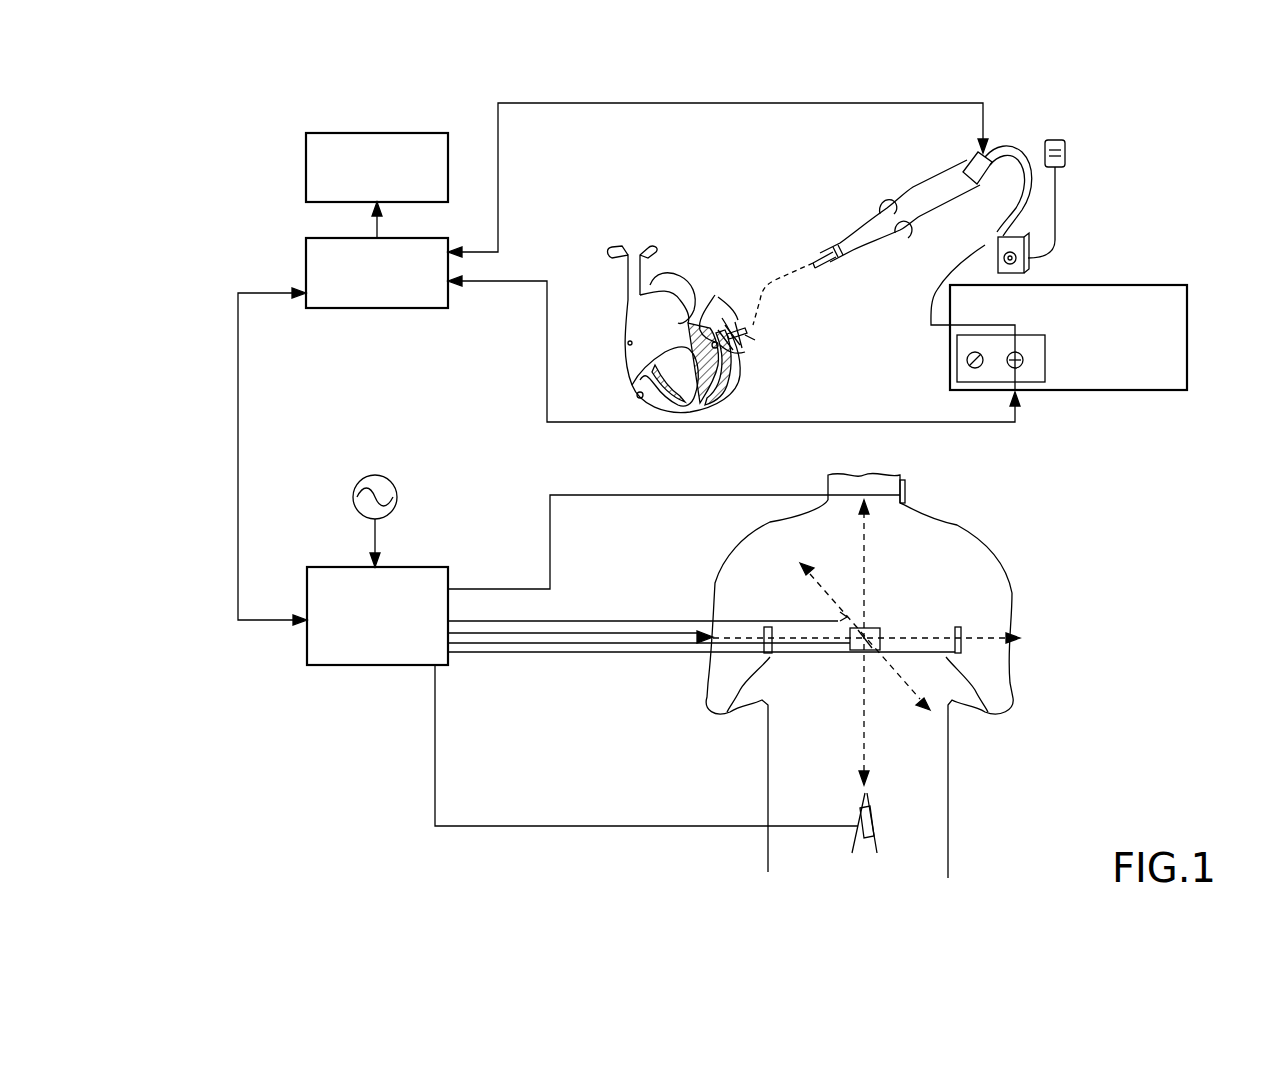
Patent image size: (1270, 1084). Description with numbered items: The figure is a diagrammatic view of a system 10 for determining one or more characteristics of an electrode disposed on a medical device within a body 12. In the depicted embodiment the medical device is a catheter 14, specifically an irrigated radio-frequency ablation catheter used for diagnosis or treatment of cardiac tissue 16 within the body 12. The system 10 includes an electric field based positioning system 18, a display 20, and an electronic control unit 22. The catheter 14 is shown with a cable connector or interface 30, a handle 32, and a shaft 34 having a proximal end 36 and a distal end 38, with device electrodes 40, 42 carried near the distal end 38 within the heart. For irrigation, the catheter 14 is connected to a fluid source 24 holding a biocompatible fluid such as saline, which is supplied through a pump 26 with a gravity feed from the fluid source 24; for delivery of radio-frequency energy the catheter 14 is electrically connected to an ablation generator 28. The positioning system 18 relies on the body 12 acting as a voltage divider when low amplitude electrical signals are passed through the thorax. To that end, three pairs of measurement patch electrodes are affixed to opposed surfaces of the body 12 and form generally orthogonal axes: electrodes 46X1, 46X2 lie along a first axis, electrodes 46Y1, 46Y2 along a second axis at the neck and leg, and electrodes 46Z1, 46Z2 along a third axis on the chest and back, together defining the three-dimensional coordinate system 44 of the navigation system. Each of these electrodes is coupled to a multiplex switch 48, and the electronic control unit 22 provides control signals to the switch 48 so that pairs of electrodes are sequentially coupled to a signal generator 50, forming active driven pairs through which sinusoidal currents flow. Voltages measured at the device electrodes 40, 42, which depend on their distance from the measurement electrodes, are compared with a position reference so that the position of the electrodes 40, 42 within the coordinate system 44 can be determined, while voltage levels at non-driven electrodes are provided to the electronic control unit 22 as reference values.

The system 10 is at (240, 129).
The body 12 is at (948, 797).
The catheter 14 is at (899, 223).
The cardiac tissue 16 is at (733, 388).
The electric field based positioning system 18 is at (362, 740).
The display 20 is at (306, 153).
The electronic control unit 22 is at (306, 246).
The fluid source 24 is at (1065, 163).
The pump 26 is at (1029, 248).
The ablation generator 28 is at (1187, 376).
The cable connector 30 is at (982, 178).
The handle 32 is at (929, 185).
The shaft 34 is at (813, 261).
The proximal end 36 is at (836, 274).
The distal end 38 is at (761, 318).
The device electrode 40 is at (717, 300).
The device electrode 42 is at (725, 330).
The coordinate system 44 is at (1028, 508).
The measurement electrode 46X1 is at (768, 656).
The measurement electrode 46X2 is at (958, 655).
The measurement electrode 46Y1 is at (908, 487).
The measurement electrode 46Y2 is at (858, 832).
The measurement electrode 46Z1 is at (876, 638).
The measurement electrode 46Z2 is at (840, 617).
The switch 48 is at (320, 665).
The signal generator 50 is at (353, 493).